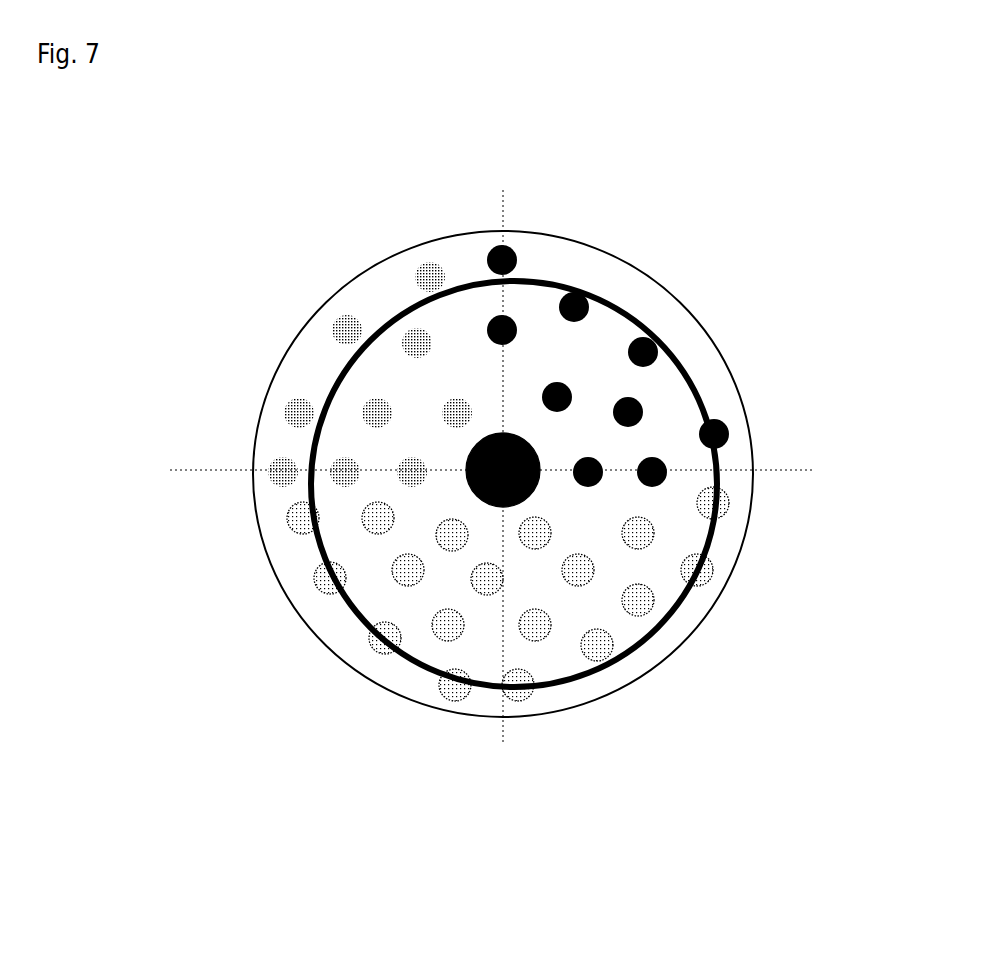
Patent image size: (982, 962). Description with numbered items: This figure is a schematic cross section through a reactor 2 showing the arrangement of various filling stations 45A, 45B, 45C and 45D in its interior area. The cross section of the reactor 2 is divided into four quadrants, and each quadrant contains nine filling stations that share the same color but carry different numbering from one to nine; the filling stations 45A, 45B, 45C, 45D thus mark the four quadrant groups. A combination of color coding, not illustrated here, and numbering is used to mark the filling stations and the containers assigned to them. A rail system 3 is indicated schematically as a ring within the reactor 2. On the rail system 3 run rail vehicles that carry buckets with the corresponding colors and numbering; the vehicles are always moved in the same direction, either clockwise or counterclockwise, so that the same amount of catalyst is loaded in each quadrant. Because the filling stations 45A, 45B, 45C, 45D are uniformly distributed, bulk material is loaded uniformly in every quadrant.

The reactor 2 is at (712, 290).
The rail system 3 is at (713, 540).
The filling station 45A is at (549, 370).
The filling station 45B is at (648, 548).
The filling station 45C is at (393, 568).
The filling station 45D is at (365, 402).